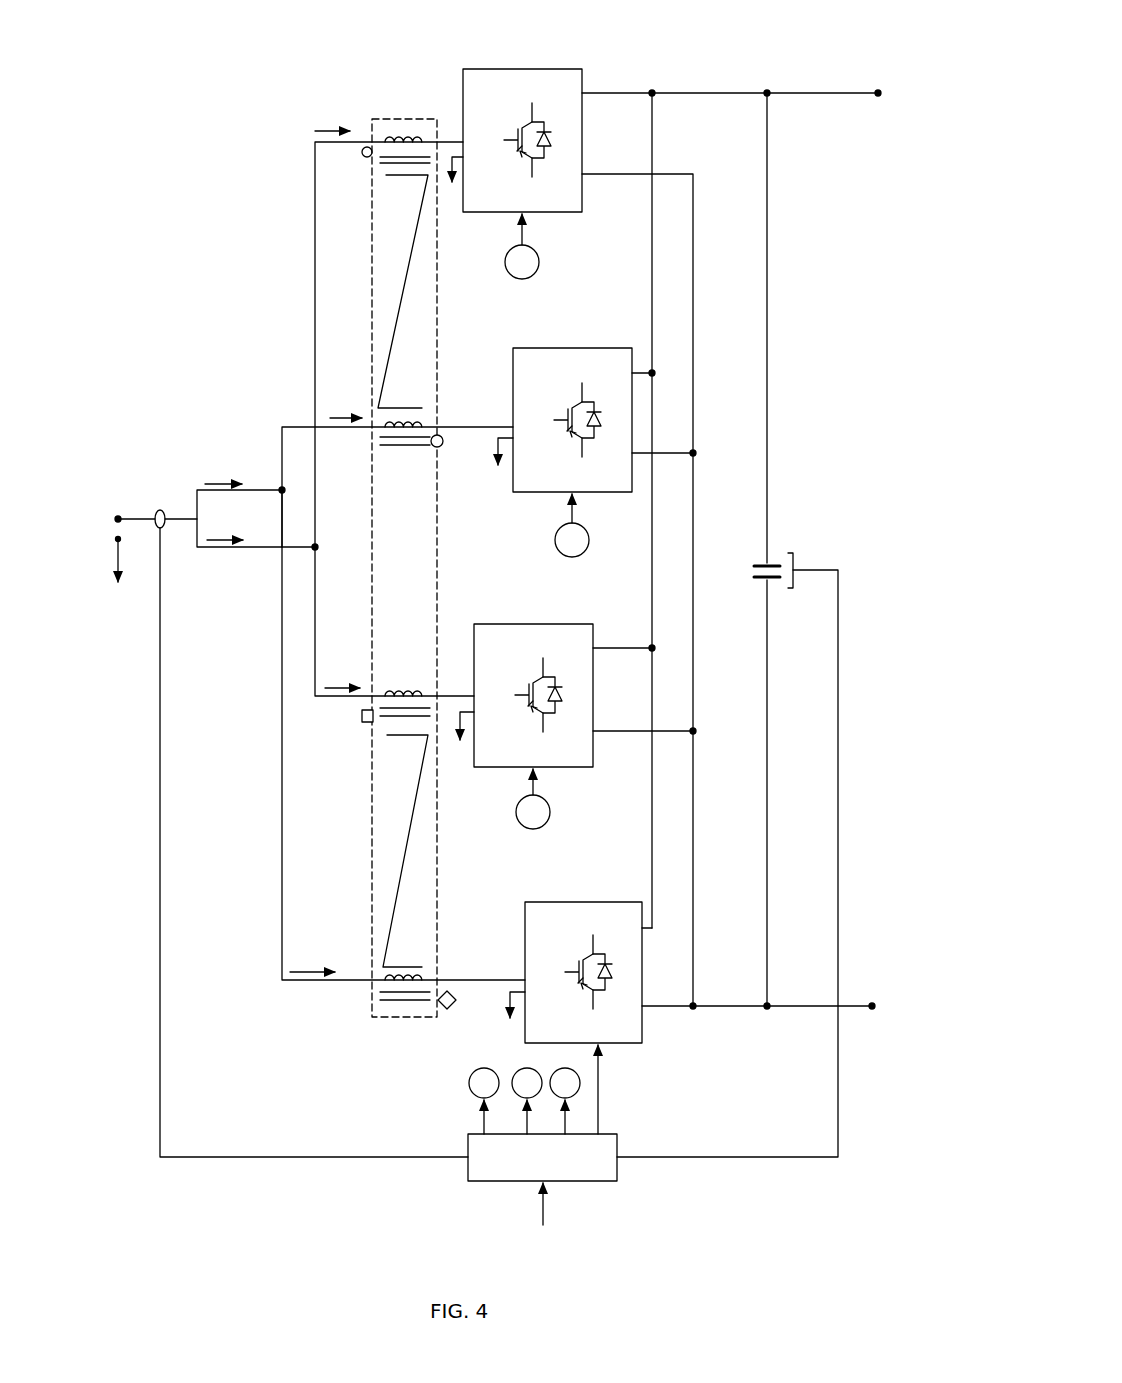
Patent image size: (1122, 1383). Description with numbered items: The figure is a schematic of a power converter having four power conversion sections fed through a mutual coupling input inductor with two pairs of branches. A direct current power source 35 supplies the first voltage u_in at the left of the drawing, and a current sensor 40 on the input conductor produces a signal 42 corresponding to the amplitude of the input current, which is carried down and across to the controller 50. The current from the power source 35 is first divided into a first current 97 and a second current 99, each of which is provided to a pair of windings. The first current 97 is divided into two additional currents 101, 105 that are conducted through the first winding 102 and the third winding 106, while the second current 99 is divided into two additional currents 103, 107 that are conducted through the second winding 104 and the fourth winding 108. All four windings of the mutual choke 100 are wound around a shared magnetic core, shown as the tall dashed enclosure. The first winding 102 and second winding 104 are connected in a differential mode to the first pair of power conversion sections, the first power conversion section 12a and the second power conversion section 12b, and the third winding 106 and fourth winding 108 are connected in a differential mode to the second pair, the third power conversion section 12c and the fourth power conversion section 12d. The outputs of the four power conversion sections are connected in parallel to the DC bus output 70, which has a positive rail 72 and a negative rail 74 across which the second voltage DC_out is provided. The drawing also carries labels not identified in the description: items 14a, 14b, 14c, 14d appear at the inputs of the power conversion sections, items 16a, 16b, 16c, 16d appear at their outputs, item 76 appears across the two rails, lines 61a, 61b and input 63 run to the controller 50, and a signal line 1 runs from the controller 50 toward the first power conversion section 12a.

The power source 35 is at (102, 478).
The current sensor 40 is at (160, 500).
The signal 42 is at (205, 1157).
The controller 50 is at (593, 1182).
The control signal line 61a is at (307, 1157).
The output feedback line 61b is at (739, 1157).
The controller input 63 is at (540, 1216).
The output 70 is at (860, 85).
The positive rail 72 is at (801, 91).
The negative rail 74 is at (801, 1010).
The output capacitor 76 is at (758, 588).
The first current 97 is at (219, 541).
The second current 99 is at (216, 482).
The mutual choke 100 is at (381, 118).
The additional current 101 is at (310, 971).
The first winding 102 is at (409, 973).
The additional current 103 is at (340, 688).
The second winding 104 is at (405, 695).
The additional current 105 is at (340, 418).
The third winding 106 is at (409, 420).
The additional current 107 is at (325, 132).
The fourth winding 108 is at (414, 135).
The first power conversion section 12a is at (580, 899).
The second power conversion section 12b is at (530, 624).
The third power conversion section 12c is at (568, 348).
The fourth power conversion section 12d is at (519, 68).
The first cell input 14a is at (512, 973).
The second cell input 14b is at (463, 688).
The third cell input 14c is at (500, 420).
The fourth cell input 14d is at (452, 135).
The first cell output 16a is at (650, 935).
The second cell output 16b is at (606, 643).
The third cell output 16c is at (640, 357).
The fourth cell output 16d is at (595, 80).
The control signal 1 is at (608, 1113).